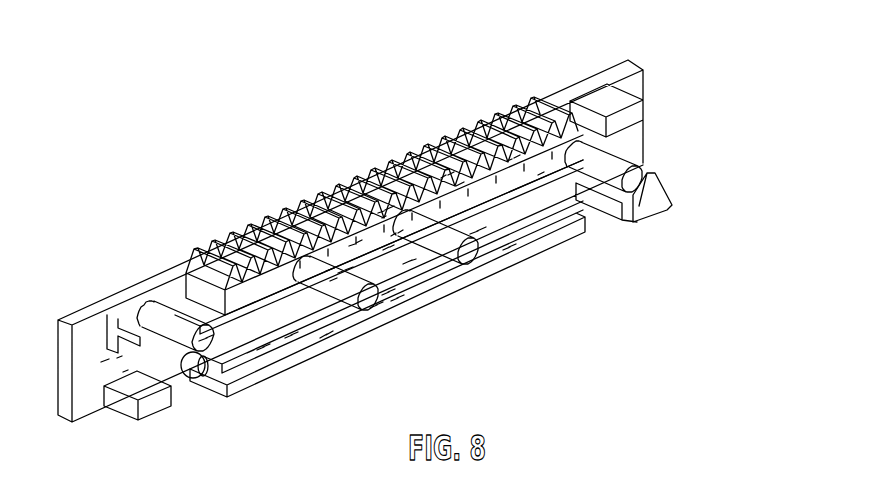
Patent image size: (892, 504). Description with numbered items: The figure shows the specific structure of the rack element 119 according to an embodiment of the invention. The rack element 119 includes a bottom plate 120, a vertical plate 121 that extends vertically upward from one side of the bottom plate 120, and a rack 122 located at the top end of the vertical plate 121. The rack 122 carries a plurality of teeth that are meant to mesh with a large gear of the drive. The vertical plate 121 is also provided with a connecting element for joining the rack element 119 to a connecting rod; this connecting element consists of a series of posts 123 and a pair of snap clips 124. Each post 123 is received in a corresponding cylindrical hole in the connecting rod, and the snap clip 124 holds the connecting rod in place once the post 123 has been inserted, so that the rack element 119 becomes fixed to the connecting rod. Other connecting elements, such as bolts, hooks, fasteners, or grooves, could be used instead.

The rack element 119 is at (207, 184).
The bottom plate 120 is at (503, 234).
The vertical plate 121 is at (90, 360).
The rack 122 is at (412, 165).
The post 123 is at (372, 297).
The snap clip 124 is at (668, 188).